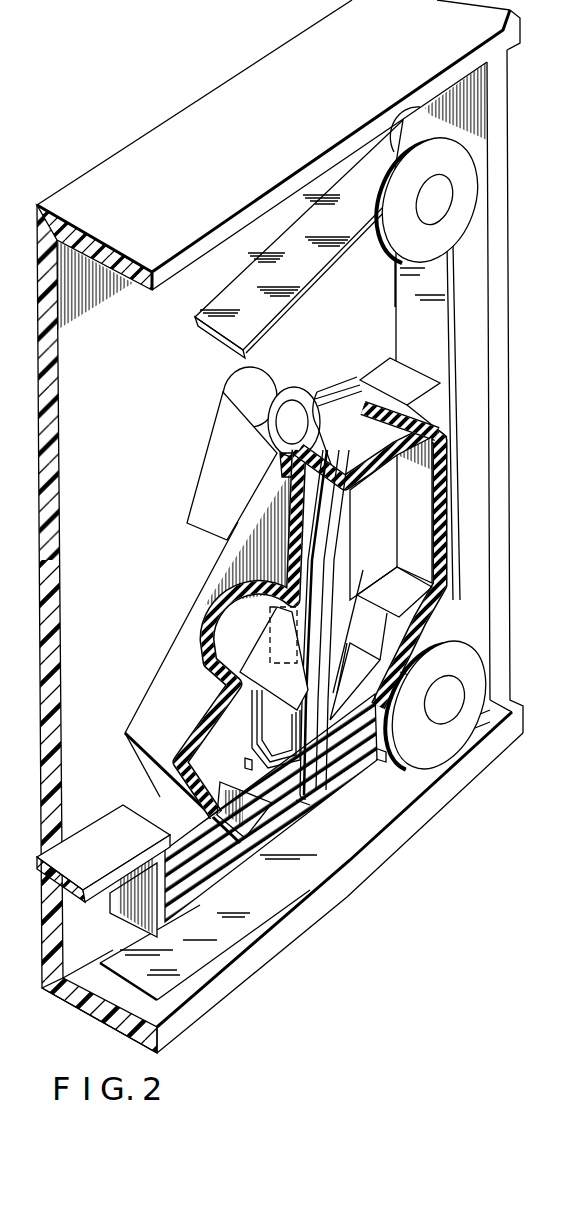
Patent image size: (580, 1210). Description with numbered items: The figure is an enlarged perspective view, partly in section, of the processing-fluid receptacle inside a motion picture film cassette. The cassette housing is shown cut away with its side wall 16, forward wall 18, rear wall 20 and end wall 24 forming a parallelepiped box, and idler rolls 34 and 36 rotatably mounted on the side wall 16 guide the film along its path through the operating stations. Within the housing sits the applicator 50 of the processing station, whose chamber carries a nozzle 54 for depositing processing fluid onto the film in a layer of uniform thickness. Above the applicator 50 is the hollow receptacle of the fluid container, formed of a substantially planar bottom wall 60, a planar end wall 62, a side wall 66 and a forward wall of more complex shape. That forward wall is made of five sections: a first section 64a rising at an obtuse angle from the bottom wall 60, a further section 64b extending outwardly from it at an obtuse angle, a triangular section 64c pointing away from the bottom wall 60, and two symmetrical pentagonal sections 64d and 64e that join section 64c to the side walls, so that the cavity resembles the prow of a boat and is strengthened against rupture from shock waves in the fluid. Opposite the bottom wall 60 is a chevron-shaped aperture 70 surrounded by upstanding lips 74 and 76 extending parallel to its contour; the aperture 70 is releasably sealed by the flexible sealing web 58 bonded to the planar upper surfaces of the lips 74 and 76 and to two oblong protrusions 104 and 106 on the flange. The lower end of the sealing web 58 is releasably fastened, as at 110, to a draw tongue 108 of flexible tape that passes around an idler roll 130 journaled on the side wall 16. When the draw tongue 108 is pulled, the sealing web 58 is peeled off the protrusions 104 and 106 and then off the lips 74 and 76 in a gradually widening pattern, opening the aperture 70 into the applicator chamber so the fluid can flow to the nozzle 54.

The side wall 16 is at (100, 386).
The forward wall 18 is at (346, 880).
The rear wall 20 is at (262, 153).
The end wall 24 is at (508, 339).
The idler roll 34 is at (467, 162).
The idler roll 36 is at (443, 752).
The applicator 50 is at (196, 704).
The nozzle 54 is at (260, 800).
The sealing web 58 is at (384, 553).
The bottom wall 60 is at (426, 496).
The end wall 62 is at (408, 389).
The first section 64a is at (414, 599).
The further section 64b is at (390, 654).
The section 64c is at (422, 673).
The section 64d is at (352, 605).
The section 64e is at (362, 651).
The side wall 66 is at (324, 506).
The aperture 70 is at (257, 709).
The lip 74 is at (268, 724).
The lip 76 is at (310, 833).
The protrusion 104 is at (248, 760).
The protrusion 106 is at (318, 772).
The draw tongue 108 is at (342, 231).
The releasable fastening 110 is at (280, 623).
The idler roll 130 is at (310, 398).